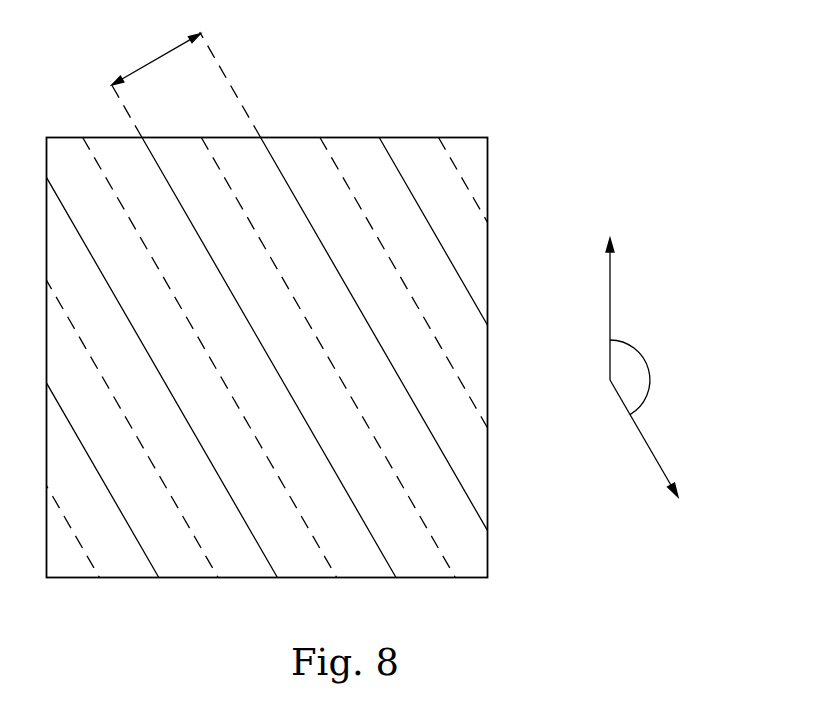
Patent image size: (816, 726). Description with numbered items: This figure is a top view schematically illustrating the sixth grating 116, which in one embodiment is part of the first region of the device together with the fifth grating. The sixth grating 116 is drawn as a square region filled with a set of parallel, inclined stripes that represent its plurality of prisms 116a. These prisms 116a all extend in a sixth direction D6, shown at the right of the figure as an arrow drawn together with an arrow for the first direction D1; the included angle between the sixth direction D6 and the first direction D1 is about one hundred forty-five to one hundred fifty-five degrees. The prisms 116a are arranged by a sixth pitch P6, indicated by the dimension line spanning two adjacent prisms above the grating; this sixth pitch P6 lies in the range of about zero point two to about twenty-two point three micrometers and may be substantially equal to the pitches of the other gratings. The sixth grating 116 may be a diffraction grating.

The sixth grating 116 is at (487, 168).
The prisms 116a is at (362, 157).
The sixth pitch P6 is at (185, 83).
The first direction D1 is at (589, 309).
The sixth direction D6 is at (638, 438).